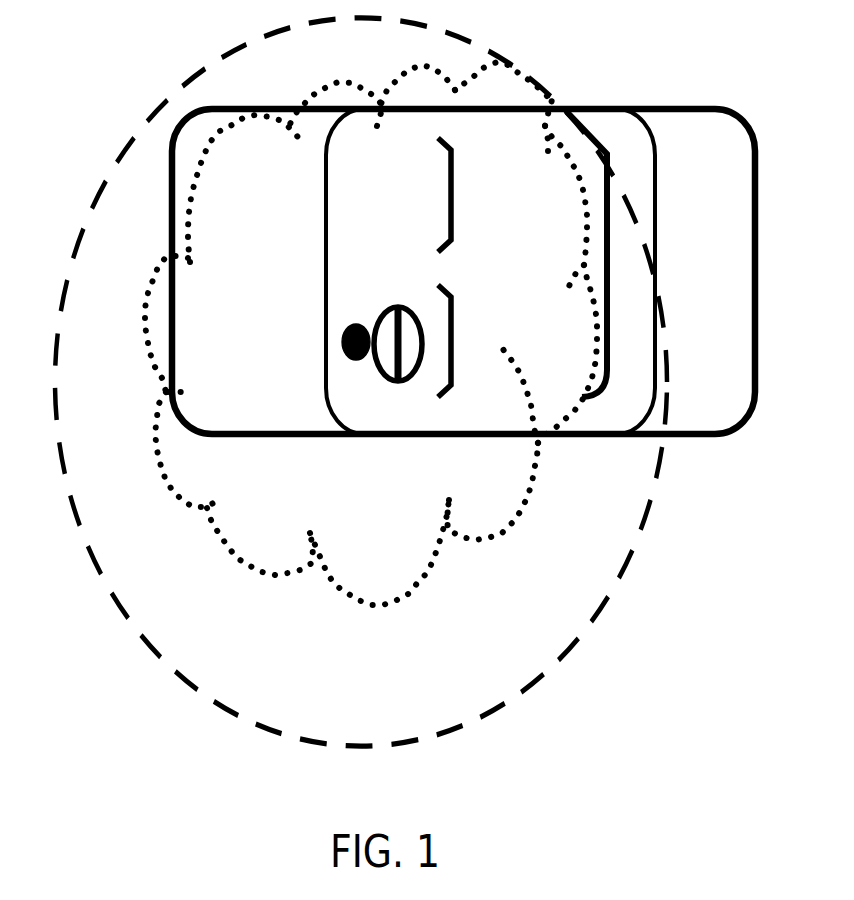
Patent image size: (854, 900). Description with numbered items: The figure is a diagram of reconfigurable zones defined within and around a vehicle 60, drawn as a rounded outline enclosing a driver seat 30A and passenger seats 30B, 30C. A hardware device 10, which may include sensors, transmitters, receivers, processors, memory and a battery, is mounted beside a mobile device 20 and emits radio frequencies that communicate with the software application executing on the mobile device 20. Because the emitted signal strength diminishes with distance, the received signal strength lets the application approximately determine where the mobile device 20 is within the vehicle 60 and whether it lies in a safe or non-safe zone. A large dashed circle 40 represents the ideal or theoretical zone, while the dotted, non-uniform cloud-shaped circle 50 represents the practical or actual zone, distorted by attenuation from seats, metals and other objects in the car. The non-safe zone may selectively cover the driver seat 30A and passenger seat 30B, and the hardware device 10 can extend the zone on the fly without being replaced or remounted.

The hardware device 10 is at (353, 323).
The mobile device 20 is at (392, 312).
The driver seat 30A is at (457, 327).
The passenger seat 30B is at (457, 201).
The passenger seat 30C is at (612, 282).
The circle 40 is at (183, 680).
The circle 50 is at (247, 567).
The vehicle 60 is at (697, 104).